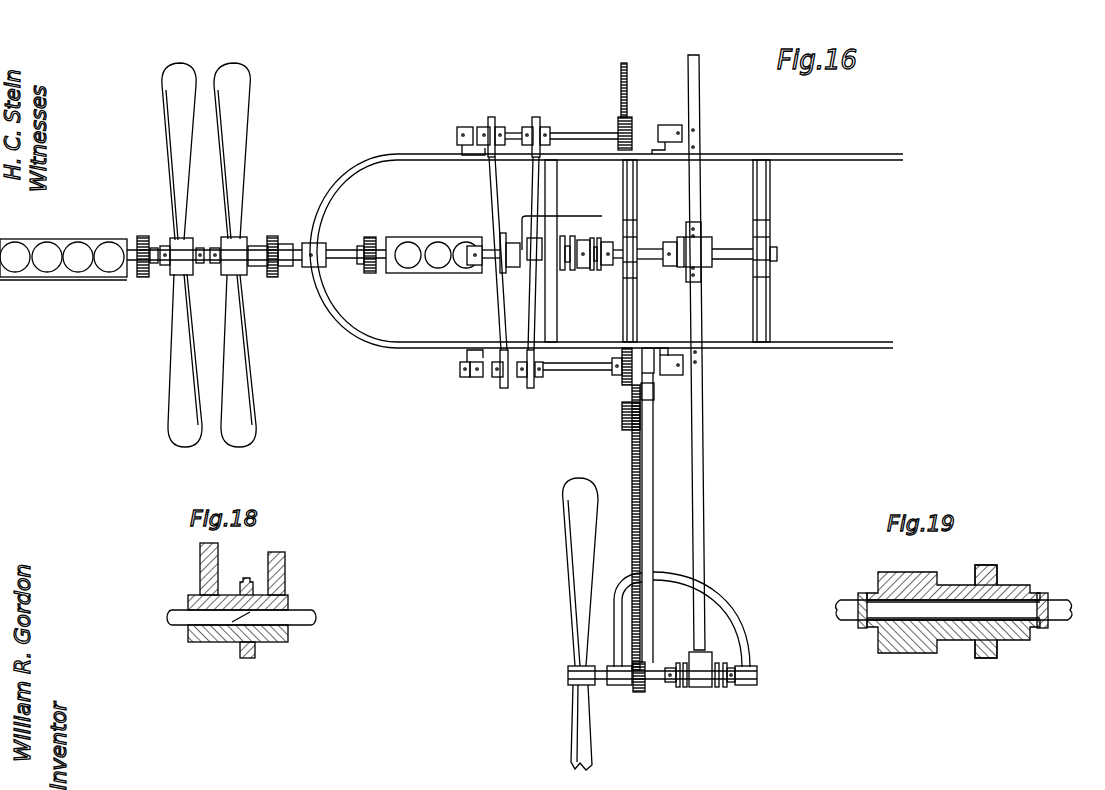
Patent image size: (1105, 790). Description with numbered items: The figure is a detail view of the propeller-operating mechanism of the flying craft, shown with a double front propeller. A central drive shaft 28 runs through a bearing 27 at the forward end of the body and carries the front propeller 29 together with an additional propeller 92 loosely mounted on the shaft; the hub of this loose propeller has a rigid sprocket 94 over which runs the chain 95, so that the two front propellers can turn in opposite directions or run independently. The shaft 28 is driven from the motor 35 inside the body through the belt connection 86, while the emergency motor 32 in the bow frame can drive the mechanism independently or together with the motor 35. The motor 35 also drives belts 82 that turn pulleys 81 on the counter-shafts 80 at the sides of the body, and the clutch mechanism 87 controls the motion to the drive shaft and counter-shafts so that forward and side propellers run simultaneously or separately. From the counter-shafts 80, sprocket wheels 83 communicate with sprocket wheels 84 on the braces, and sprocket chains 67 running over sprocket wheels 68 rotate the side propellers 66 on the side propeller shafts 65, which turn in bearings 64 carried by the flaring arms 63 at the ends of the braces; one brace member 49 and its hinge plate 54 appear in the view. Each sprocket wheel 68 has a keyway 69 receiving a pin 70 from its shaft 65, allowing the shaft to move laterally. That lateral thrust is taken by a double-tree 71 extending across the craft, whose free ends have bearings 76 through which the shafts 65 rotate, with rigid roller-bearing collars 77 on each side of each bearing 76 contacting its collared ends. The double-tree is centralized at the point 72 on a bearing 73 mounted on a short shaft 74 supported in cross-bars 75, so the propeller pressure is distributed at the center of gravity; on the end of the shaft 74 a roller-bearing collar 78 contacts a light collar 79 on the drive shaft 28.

In FIG. 16, the motor 32 is at (108, 238).
In FIG. 16, the chain 95 is at (272, 236).
In FIG. 16, the bearing 27 is at (306, 242).
In FIG. 16, the propeller 29 is at (177, 426).
In FIG. 16, the additional propeller 92 is at (251, 413).
In FIG. 16, the shaft 28 is at (348, 251).
In FIG. 19, the shaft 28 is at (1063, 608).
In FIG. 16, the belt connection 86 is at (372, 274).
In FIG. 16, the second motor 35 is at (440, 240).
In FIG. 16, the clutch mechanism 87 is at (515, 240).
In FIG. 16, the belts 82 is at (530, 173).
In FIG. 16, the pulleys 81 is at (533, 123).
In FIG. 16, the counter-shafts 80 is at (583, 134).
In FIG. 16, the sprocket wheels 83 is at (629, 126).
In FIG. 16, the double-tree 71 is at (700, 112).
In FIG. 16, the cross-bars 75 is at (637, 211).
In FIG. 16, the central point of double-tree 72 is at (704, 228).
In FIG. 16, the short shaft 74 is at (733, 248).
In FIG. 16, the bearing 73 is at (706, 265).
In FIG. 16, the roller-bearing collar 78 is at (608, 268).
In FIG. 16, the light collar 79 is at (581, 274).
In FIG. 16, the projecting plate 54 is at (654, 388).
In FIG. 16, the sprocket wheels 84 is at (623, 421).
In FIG. 16, the bracket member 49 is at (648, 536).
In FIG. 16, the sprocket chains 67 is at (637, 544).
In FIG. 16, the side propellers 66 is at (578, 633).
In FIG. 16, the flaring arms 63 is at (731, 612).
In FIG. 16, the rigid collars 77 is at (668, 663).
In FIG. 16, the bearings 64 is at (621, 686).
In FIG. 18, the bearings 64 is at (191, 633).
In FIG. 16, the sprocket wheels 68 is at (644, 691).
In FIG. 18, the sprocket wheels 68 is at (251, 666).
In FIG. 16, the bearings 76 is at (705, 688).
In FIG. 16, the side propeller shafts 65 is at (603, 682).
In FIG. 18, the side propeller shafts 65 is at (312, 611).
In FIG. 18, the keyways 69 is at (252, 592).
In FIG. 18, the pins 70 is at (223, 643).
In FIG. 19, the rigid sprocket 94 is at (986, 659).